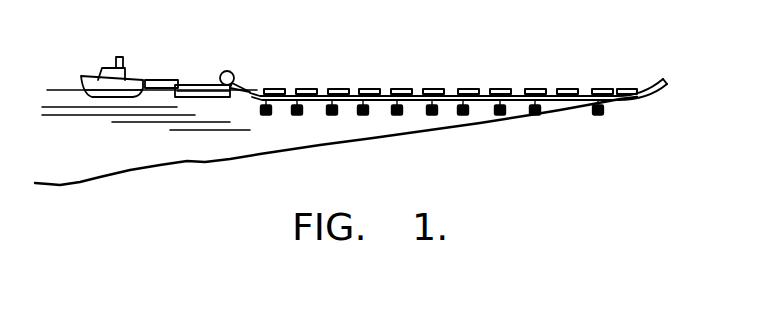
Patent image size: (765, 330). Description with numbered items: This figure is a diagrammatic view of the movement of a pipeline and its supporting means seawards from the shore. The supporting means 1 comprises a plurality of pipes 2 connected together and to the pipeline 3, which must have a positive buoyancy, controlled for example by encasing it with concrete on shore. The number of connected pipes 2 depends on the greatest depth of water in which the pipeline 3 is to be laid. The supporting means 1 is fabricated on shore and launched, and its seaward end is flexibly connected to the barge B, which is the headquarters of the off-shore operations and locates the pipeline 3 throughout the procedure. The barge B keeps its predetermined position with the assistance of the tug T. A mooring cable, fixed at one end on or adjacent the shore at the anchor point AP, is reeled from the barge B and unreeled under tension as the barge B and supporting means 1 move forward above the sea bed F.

The tug T is at (114, 50).
The barge B is at (191, 70).
The supporting means 1 is at (337, 70).
The pipes 2 is at (272, 88).
The pipeline 3 is at (637, 90).
The sea floor F is at (257, 158).
The anchor point AP is at (604, 119).